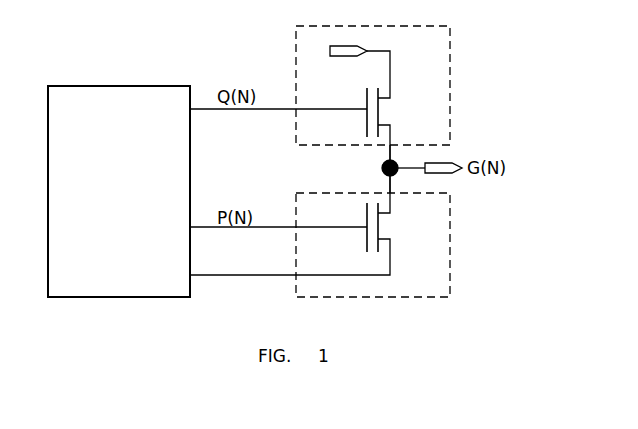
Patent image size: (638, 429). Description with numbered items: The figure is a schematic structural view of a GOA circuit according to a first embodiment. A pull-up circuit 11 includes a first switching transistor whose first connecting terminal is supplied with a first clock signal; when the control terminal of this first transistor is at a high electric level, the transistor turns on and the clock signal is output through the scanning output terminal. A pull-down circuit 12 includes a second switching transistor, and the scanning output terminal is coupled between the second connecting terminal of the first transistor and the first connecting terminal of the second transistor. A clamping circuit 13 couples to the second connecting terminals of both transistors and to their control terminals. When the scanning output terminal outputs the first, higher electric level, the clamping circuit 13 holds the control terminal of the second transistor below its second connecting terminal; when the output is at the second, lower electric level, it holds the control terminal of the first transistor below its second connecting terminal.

The pull-up circuit 11 is at (450, 92).
The pull-down circuit 12 is at (450, 243).
The clamping circuit 13 is at (118, 86).